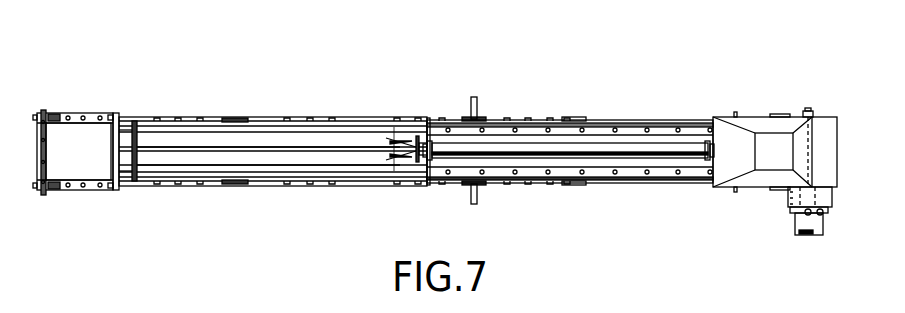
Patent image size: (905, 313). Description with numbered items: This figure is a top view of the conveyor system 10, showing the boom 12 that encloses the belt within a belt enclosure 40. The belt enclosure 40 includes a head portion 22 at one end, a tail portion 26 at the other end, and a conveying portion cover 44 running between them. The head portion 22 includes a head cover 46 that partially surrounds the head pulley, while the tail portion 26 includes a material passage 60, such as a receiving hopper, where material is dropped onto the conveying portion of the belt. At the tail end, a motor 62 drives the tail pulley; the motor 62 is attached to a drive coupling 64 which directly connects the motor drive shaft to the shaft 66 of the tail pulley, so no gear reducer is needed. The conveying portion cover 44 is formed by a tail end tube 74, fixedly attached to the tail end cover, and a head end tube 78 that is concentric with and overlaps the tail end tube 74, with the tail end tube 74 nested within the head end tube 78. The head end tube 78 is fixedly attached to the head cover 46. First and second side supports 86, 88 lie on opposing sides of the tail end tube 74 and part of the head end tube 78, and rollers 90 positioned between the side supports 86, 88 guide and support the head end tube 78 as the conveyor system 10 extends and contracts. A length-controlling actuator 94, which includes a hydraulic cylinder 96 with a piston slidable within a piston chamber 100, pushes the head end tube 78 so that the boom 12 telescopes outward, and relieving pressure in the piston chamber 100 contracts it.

The conveyor system 10 is at (364, 88).
The boom 12 is at (251, 118).
The head portion 22 is at (58, 122).
The tail portion 26 is at (773, 115).
The belt enclosure 40 is at (357, 186).
The conveying portion cover 44 is at (297, 130).
The head cover 46 is at (73, 140).
The material passage 60 is at (737, 130).
The motor 62 is at (803, 228).
The drive coupling 64 is at (785, 198).
The shaft 66 is at (808, 112).
The tail end tube 74 is at (630, 166).
The head end tube 78 is at (200, 152).
The first side support 86 is at (420, 186).
The second side support 88 is at (428, 118).
The rollers 90 is at (310, 188).
The length-controlling actuator 94 is at (533, 155).
The hydraulic cylinder 96 is at (498, 153).
The piston chamber 100 is at (598, 153).